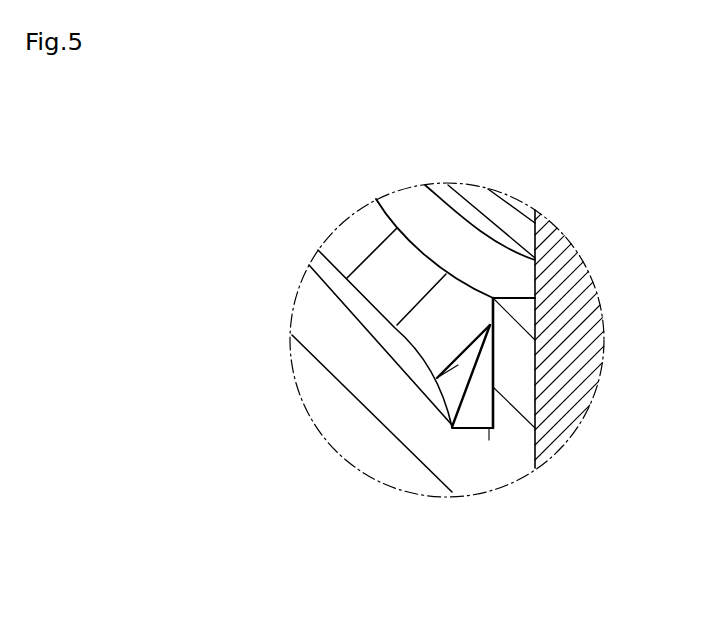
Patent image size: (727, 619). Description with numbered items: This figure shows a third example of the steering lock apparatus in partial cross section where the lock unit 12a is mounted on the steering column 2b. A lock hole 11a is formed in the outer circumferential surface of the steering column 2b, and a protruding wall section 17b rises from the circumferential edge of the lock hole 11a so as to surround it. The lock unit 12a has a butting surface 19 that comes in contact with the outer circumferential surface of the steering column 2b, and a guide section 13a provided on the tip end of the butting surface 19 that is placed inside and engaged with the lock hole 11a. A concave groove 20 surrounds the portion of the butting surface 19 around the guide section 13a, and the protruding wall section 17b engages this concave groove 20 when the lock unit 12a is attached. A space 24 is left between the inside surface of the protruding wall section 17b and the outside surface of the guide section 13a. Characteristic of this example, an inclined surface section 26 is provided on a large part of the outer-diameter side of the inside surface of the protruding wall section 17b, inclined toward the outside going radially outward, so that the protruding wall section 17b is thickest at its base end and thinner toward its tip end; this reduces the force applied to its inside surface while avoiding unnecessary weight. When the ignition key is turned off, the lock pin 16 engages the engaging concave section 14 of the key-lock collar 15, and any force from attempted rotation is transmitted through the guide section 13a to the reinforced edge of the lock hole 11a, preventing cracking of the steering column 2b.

The steering column 2b is at (362, 227).
The key-lock collar 15 is at (457, 204).
The lock hole 11a is at (492, 303).
The engaging concave section 14 is at (539, 238).
The butting surface 19 is at (332, 268).
The guide section 13a is at (537, 305).
The inclined surface section 26 is at (470, 388).
The lock unit 12a is at (342, 390).
The lock pin 16 is at (563, 427).
The protruding wall section 17b is at (437, 380).
The concave groove 20 is at (452, 422).
The space 24 is at (489, 440).